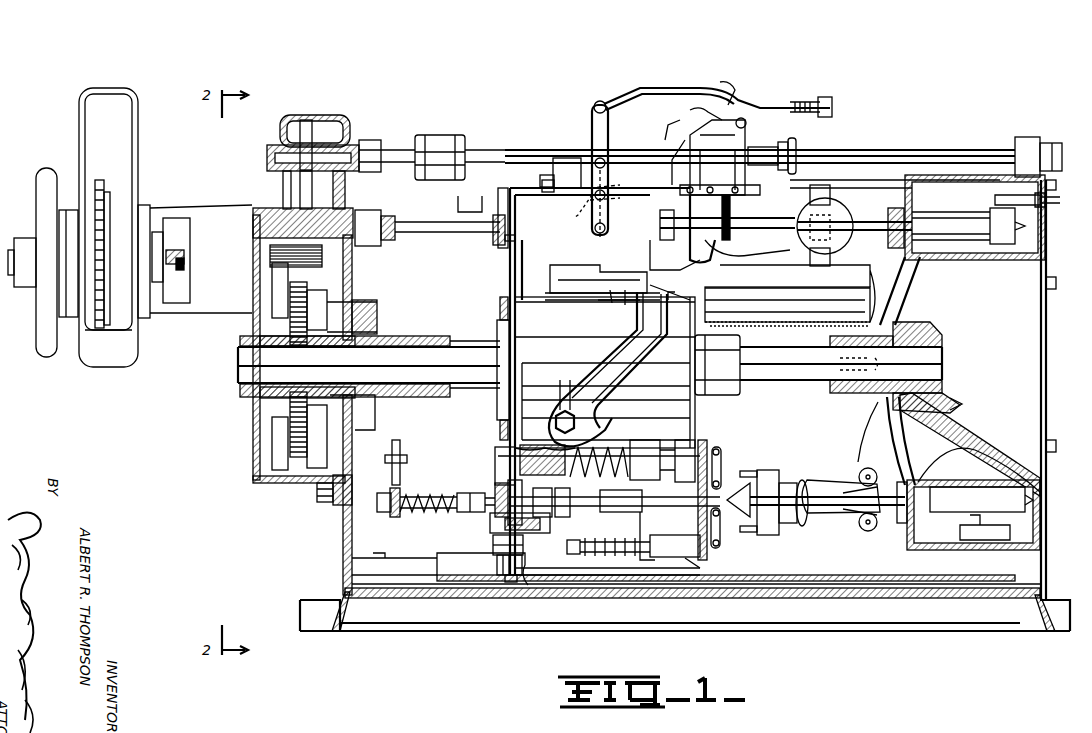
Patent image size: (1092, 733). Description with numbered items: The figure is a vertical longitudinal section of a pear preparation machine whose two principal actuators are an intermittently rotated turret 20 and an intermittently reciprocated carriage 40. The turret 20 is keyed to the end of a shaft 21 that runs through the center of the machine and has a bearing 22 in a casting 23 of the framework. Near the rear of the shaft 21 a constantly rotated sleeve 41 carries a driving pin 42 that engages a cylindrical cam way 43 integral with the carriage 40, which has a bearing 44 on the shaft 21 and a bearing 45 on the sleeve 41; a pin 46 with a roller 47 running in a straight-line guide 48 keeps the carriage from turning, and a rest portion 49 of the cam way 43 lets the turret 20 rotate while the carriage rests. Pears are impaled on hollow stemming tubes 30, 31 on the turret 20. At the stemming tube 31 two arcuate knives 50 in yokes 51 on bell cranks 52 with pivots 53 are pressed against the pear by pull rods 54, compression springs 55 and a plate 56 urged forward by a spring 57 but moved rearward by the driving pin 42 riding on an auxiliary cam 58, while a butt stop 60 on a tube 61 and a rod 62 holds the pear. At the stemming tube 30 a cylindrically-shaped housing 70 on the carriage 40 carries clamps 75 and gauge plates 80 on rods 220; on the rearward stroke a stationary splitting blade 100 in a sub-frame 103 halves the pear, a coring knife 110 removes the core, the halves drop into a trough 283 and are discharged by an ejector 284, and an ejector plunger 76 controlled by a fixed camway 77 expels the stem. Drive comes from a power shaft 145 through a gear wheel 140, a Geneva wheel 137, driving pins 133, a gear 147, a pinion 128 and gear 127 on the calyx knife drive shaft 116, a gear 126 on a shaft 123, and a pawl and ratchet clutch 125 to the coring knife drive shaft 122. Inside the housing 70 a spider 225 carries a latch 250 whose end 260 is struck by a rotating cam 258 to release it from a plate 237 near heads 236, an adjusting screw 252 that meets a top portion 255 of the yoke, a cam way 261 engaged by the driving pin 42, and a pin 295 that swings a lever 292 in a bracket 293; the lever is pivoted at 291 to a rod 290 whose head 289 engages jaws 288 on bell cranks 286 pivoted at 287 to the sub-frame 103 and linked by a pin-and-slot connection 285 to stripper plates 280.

The power shaft 145 is at (161, 198).
The pinion 128 is at (300, 210).
The gear 126 is at (332, 136).
The gear 127 is at (330, 200).
The shaft 123 is at (388, 150).
The pawl and ratchet clutch 125 is at (445, 140).
The coring knife drive shaft 122 is at (545, 133).
The adjusting screw 252 is at (552, 170).
The top portion of yoke 255 is at (545, 186).
The lever 292 is at (590, 125).
The pivotal connection 291 is at (600, 100).
The bracket 293 is at (608, 196).
The pin 295 is at (576, 210).
The bell cranks 286 is at (740, 104).
The jaws 288 is at (724, 83).
The rod 290 is at (790, 100).
The head 289 is at (826, 103).
The pin-and-slot connection 285 is at (695, 125).
The pivot 287 is at (747, 124).
The sub-frame 103 is at (772, 152).
The coring knife 110 is at (742, 217).
The stationary splitting blade 100 is at (770, 253).
The rods 220 is at (668, 240).
The stripper plates 280 is at (800, 182).
The gauge plates 80 is at (822, 200).
The clamps 75 is at (832, 195).
The stemming tube 30 is at (875, 220).
The ejector plunger 76 is at (950, 220).
The fixed camway 77 is at (995, 200).
The rotating cam 258 is at (380, 210).
The latch 250 is at (498, 200).
The end of latch 260 is at (462, 206).
The calyx knife drive shaft 116 is at (470, 232).
The heads of adjusting sleeves 236 is at (497, 245).
The plate 237 is at (510, 225).
The cylindrically-shaped housing 70 is at (568, 245).
The gear 147 is at (348, 300).
The Geneva wheel 137 is at (262, 462).
The driving pins 133 is at (316, 450).
The gear wheel 140 is at (290, 483).
The shaft 21 is at (240, 365).
The sleeve 41 is at (438, 335).
The bearing 45 is at (502, 340).
The auxiliary cam 58 is at (588, 362).
The spider 225 is at (590, 288).
The cam way 261 is at (612, 303).
The rest portion 49 is at (668, 298).
The cylindrical cam way 43 is at (620, 372).
The driving pin 42 is at (562, 396).
The bearing 44 is at (738, 392).
The carriage 40 is at (705, 445).
The ejector 284 is at (840, 288).
The trough 283 is at (768, 324).
The turret 20 is at (905, 305).
The bearing 22 is at (945, 388).
The casting 23 is at (982, 432).
The stemming tube 31 is at (850, 512).
The yokes 51 is at (820, 480).
The arcuate knives 50 is at (890, 466).
The butt stop 60 is at (790, 512).
The bell cranks 52 is at (724, 465).
The pivots 53 is at (742, 475).
The spring 57 is at (607, 468).
The tube 61 is at (590, 505).
The rod 62 is at (492, 492).
The pin 46 is at (498, 540).
The roller 47 is at (500, 562).
The straight-line guide 48 is at (440, 565).
The compression spring 55 is at (620, 540).
The pull rod 54 is at (620, 556).
The plate 56 is at (670, 543).